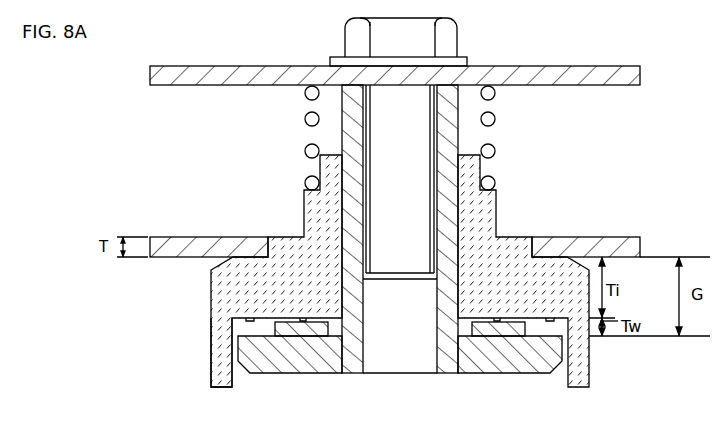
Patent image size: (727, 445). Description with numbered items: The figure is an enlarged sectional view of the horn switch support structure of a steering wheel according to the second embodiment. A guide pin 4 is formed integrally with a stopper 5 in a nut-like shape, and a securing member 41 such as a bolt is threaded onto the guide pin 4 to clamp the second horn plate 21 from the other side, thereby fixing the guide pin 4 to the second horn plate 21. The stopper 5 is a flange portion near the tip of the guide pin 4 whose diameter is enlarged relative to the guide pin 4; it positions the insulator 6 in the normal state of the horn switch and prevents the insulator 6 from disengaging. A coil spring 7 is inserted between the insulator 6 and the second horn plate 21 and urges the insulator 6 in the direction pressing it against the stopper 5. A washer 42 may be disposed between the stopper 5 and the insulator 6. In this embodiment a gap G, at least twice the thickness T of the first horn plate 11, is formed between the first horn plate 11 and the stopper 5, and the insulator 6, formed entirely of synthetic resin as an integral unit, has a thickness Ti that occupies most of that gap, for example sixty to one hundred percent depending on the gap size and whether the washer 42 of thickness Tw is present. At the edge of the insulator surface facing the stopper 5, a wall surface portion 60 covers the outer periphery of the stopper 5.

The guide pin 4 is at (406, 313).
The stopper 5 is at (290, 374).
The insulator 6 is at (311, 288).
The coil spring 7 is at (305, 151).
The first horn plate 11 is at (200, 236).
The second horn plate 21 is at (190, 86).
The securing member 41 is at (345, 27).
The washer 42 is at (493, 338).
The wall surface portion 60 is at (211, 356).